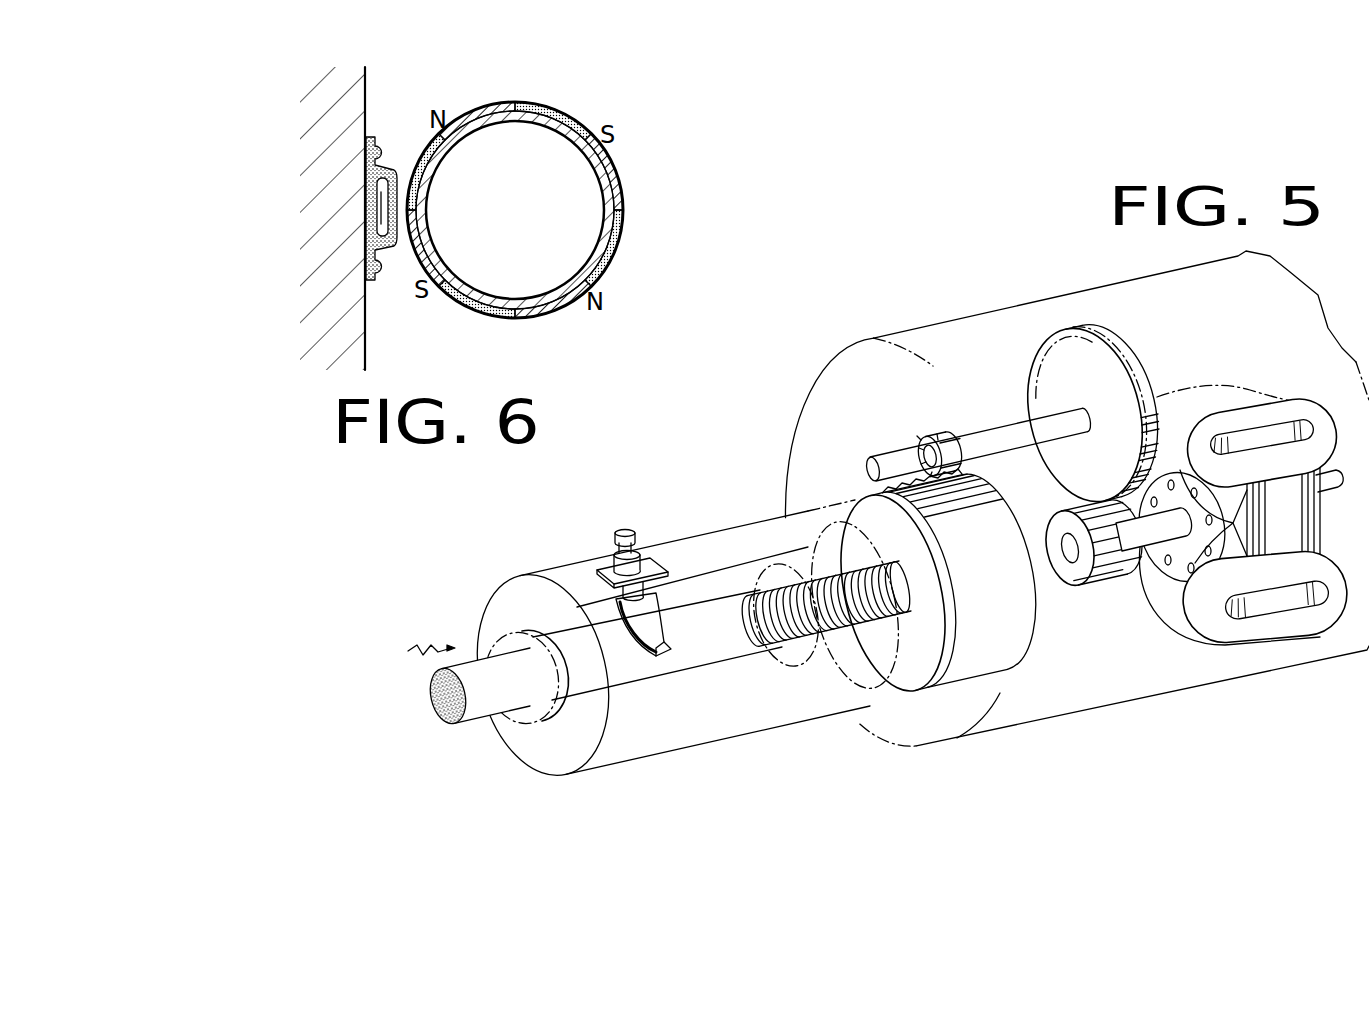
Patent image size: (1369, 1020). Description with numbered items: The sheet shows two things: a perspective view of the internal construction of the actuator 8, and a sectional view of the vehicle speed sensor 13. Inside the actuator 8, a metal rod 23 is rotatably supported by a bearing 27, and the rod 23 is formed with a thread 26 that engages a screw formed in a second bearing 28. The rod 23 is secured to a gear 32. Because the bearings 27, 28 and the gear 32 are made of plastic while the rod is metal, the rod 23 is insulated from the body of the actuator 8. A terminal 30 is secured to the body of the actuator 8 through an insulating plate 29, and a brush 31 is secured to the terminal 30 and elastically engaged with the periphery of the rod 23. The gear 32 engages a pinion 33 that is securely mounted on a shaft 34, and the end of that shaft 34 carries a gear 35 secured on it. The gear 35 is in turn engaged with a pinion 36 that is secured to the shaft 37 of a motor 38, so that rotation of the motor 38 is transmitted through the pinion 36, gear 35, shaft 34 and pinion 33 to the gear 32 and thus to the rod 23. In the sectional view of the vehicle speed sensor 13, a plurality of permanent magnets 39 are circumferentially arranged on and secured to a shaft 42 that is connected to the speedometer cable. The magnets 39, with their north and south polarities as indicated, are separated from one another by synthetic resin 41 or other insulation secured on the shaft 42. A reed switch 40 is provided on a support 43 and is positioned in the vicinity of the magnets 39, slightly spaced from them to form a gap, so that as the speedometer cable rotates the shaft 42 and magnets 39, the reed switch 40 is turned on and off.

In FIG. 5, the actuator 8 is at (1170, 692).
In FIG. 6, the vehicle speed sensor 13 is at (650, 130).
In FIG. 5, the rod 23 is at (481, 706).
In FIG. 5, the thread 26 is at (777, 655).
In FIG. 5, the bearing 27 is at (521, 722).
In FIG. 5, the bearing 28 is at (805, 683).
In FIG. 5, the insulating plate 29 is at (664, 568).
In FIG. 5, the terminal 30 is at (612, 554).
In FIG. 5, the brush 31 is at (650, 615).
In FIG. 5, the gear 32 is at (856, 508).
In FIG. 5, the pinion 33 is at (930, 435).
In FIG. 5, the shaft 34 is at (985, 438).
In FIG. 5, the gear 35 is at (1066, 486).
In FIG. 5, the pinion 36 is at (1073, 573).
In FIG. 5, the shaft 37 is at (1135, 550).
In FIG. 5, the motor 38 is at (1288, 395).
In FIG. 6, the permanent magnets 39 is at (447, 120).
In FIG. 6, the reed switch 40 is at (390, 177).
In FIG. 6, the synthetic resin 41 is at (567, 115).
In FIG. 6, the shaft 42 is at (608, 197).
In FIG. 6, the support 43 is at (353, 99).